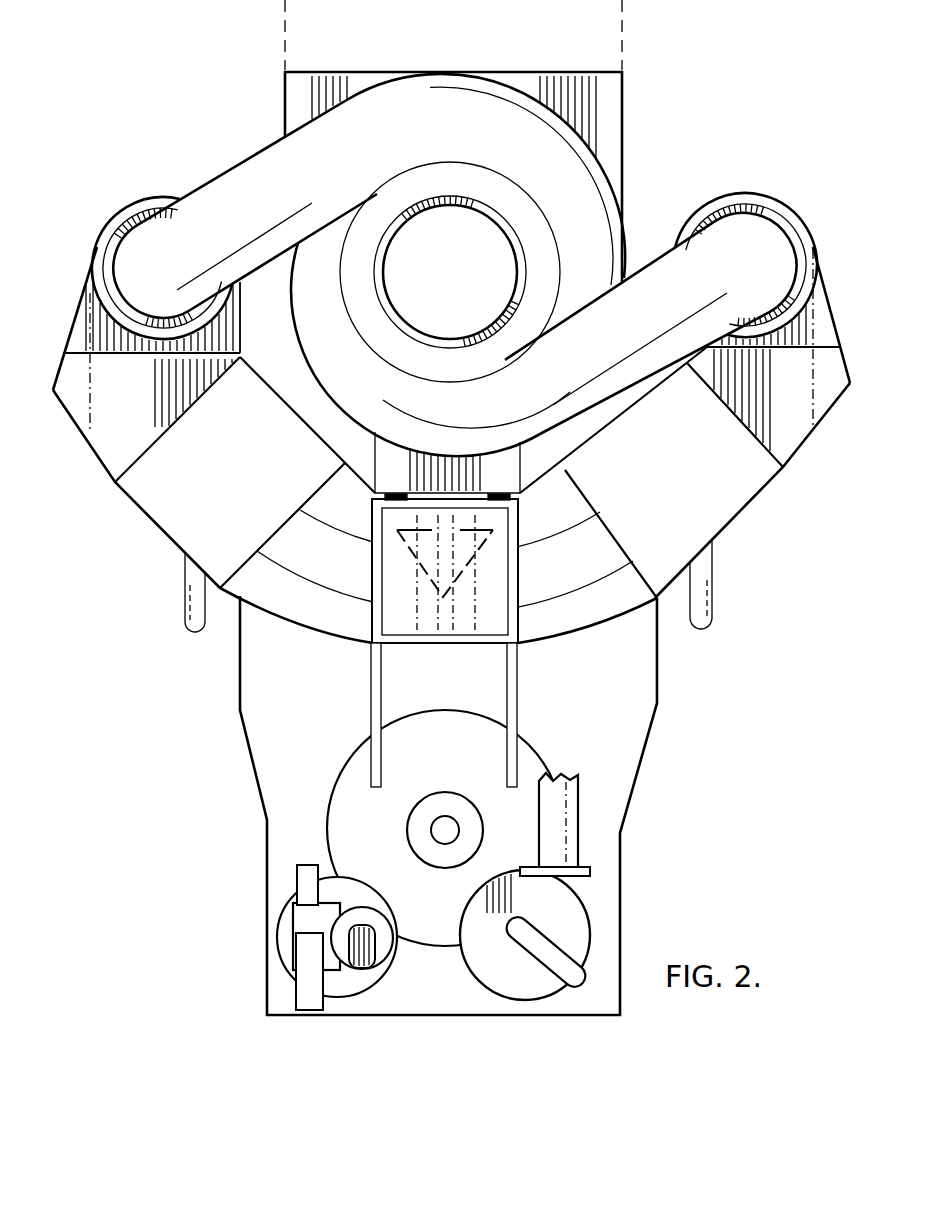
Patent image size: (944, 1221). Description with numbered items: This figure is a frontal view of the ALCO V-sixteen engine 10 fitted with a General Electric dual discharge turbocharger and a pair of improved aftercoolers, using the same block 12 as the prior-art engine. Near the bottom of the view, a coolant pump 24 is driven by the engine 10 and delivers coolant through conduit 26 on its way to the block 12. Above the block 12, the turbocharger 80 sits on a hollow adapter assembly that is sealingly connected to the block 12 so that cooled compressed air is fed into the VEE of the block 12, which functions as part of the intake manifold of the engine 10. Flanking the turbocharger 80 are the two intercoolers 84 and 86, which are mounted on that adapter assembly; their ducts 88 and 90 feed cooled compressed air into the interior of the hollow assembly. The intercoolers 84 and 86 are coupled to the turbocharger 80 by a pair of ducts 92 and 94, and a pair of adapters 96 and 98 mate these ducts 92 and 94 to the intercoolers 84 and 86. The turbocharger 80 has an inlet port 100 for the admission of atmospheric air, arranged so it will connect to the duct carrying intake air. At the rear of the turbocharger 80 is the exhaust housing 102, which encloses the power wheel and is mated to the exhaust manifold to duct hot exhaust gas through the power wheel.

The engine 10 is at (443, 528).
The block 12 is at (631, 798).
The coolant pump 24 is at (483, 962).
The conduit 26 is at (577, 845).
The turbocharger 80 is at (537, 248).
The intercooler 84 is at (750, 480).
The intercooler 86 is at (158, 491).
The duct 88 is at (610, 560).
The duct 90 is at (322, 574).
The duct 92 is at (658, 275).
The duct 94 is at (217, 200).
The adapter 96 is at (813, 302).
The adapter 98 is at (82, 343).
The inlet port 100 is at (378, 238).
The exhaust housing 102 is at (626, 92).